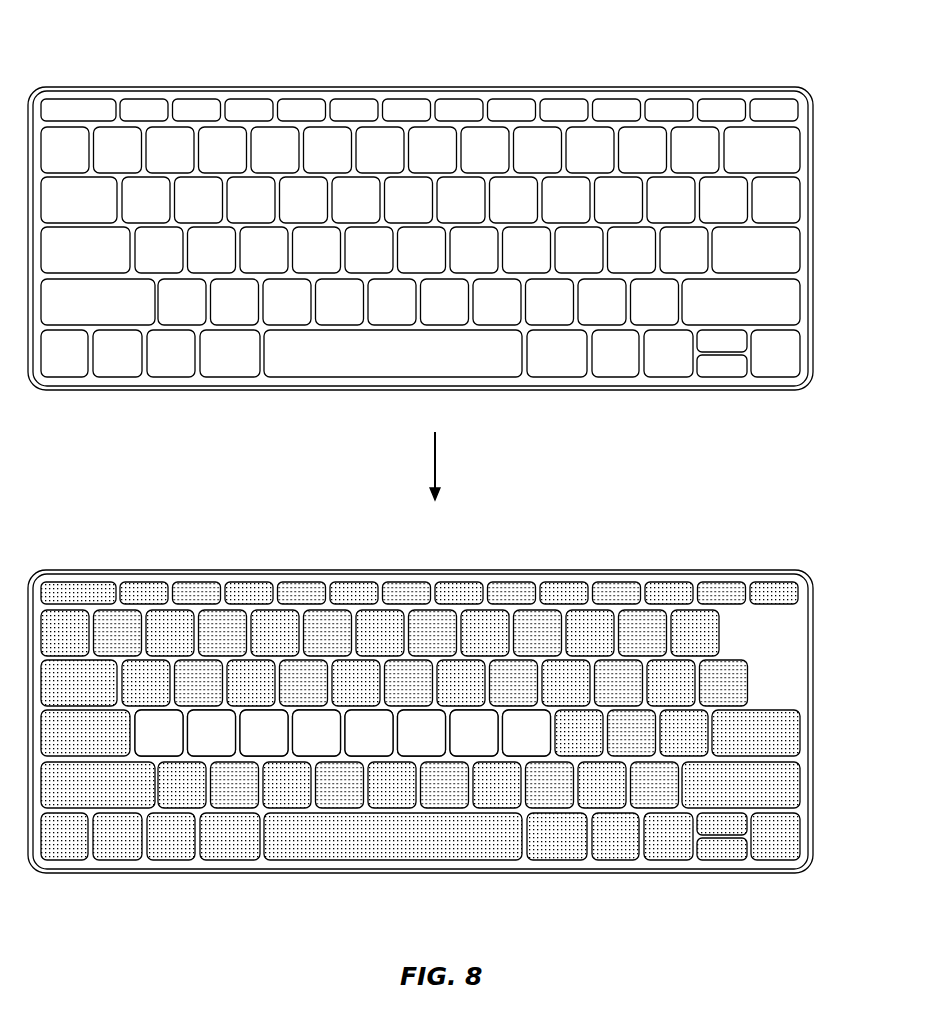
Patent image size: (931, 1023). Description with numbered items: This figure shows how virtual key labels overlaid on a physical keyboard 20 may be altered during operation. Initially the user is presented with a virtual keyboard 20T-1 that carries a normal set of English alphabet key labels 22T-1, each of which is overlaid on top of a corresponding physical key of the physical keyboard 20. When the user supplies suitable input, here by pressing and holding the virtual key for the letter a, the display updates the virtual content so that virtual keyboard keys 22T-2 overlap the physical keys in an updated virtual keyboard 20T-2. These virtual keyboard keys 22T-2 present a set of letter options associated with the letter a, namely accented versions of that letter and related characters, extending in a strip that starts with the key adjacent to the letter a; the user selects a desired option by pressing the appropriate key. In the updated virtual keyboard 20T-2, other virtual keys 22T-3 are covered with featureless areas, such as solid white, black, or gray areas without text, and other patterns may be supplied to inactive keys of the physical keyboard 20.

The physical keyboard 20 is at (812, 163).
The virtual keyboard 20T-1 is at (454, 197).
The updated virtual keyboard 20T-2 is at (420, 718).
The English alphabet key labels 22T-1 is at (793, 143).
The virtual keyboard keys 22T-2 is at (375, 757).
The virtual keys 22T-3 is at (612, 855).